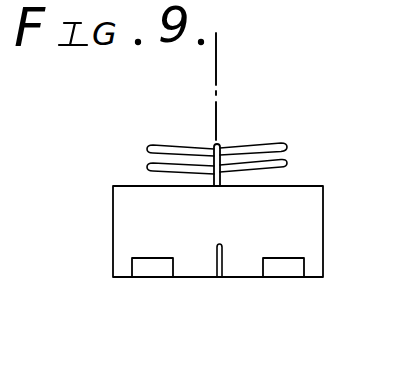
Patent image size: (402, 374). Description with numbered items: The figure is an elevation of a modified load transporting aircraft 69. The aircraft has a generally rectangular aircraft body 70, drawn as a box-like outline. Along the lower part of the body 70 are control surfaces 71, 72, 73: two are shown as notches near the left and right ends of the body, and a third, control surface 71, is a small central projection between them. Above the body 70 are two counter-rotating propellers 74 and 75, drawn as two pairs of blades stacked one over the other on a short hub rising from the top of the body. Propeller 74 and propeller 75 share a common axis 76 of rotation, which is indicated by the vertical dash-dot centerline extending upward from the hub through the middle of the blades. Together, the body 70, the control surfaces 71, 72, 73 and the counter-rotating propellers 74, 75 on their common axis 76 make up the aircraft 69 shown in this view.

The modified aircraft 69 is at (338, 190).
The aircraft body 70 is at (113, 217).
The control surface 71 is at (215, 262).
The control surface 72 is at (143, 272).
The control surface 73 is at (284, 272).
The counter-rotating propeller 74 is at (147, 167).
The counter-rotating propeller 75 is at (262, 143).
The common axis of rotation 76 is at (213, 63).